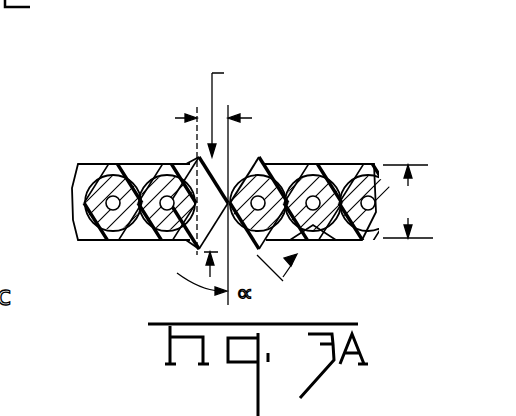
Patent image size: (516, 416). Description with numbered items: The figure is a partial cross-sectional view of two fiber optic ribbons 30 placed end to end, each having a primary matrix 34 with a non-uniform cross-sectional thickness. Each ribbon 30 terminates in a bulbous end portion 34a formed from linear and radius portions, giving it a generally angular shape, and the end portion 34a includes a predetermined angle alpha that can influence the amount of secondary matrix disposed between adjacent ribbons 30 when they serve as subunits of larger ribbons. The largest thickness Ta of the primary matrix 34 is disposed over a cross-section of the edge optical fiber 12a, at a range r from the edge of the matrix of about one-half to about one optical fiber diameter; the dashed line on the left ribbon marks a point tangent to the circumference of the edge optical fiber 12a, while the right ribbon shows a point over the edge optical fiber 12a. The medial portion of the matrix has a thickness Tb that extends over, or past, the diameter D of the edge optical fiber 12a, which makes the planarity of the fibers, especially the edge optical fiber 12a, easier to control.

The ribbon 30 is at (90, 163).
The end portion 34a is at (263, 160).
The primary matrix 34 is at (317, 242).
The edge optical fiber 12a is at (167, 240).
The diameter of edge optical fiber D is at (168, 186).
The largest thickness Ta is at (230, 169).
The medial portion thickness Tb is at (408, 201).
The range r is at (222, 203).